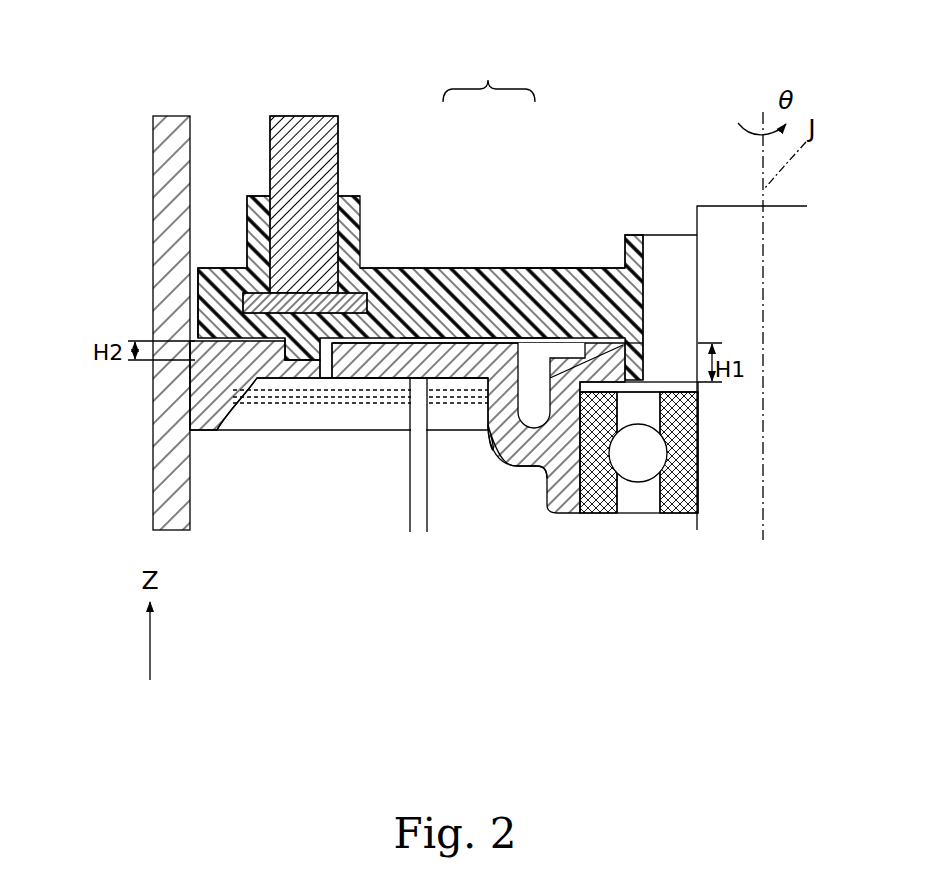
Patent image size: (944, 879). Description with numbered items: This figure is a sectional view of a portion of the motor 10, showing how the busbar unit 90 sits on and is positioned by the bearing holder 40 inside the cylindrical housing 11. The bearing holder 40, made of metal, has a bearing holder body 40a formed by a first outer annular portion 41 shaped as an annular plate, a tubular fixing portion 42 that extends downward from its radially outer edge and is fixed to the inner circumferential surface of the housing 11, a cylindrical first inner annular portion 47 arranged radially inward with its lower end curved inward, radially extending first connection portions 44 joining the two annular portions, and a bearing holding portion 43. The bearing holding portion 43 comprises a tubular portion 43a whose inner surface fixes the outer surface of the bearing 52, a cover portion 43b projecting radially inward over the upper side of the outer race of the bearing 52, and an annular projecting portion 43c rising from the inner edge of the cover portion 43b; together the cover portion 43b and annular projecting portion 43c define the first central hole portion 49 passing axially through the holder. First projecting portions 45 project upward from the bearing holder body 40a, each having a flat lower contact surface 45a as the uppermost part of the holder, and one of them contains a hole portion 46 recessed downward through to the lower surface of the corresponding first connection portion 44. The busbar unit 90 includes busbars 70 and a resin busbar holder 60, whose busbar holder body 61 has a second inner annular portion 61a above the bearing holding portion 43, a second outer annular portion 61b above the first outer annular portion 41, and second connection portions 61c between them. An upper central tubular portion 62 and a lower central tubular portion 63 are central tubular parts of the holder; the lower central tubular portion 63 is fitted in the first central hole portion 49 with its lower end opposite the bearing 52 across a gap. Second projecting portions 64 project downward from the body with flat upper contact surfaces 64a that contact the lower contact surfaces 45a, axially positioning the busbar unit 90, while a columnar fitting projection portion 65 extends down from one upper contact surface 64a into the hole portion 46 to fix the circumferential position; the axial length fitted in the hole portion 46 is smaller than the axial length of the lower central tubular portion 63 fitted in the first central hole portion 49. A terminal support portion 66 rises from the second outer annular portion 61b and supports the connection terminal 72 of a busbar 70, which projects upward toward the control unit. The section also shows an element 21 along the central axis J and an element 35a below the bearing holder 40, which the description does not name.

The motor 10 is at (700, 86).
The housing 11 is at (178, 162).
The shaft 21 is at (785, 213).
The tube portion 35a is at (427, 486).
The bearing holder 40 is at (203, 440).
The bearing holder body 40a is at (511, 472).
The first outer annular portion 41 is at (258, 378).
The tubular fixing portion 42 is at (215, 410).
The bearing holding portion 43 is at (655, 600).
The tubular portion 43a is at (580, 484).
The cover portion 43b is at (624, 478).
The annular projecting portion 43c is at (679, 486).
The first connection portion 44 is at (463, 373).
The first projecting portion 45 is at (422, 285).
The lower contact surface 45a is at (352, 378).
The hole portion 46 is at (326, 375).
The first inner annular portion 47 is at (487, 433).
The first central hole portion 49 is at (635, 355).
The bearing 52 is at (660, 460).
The busbar holder 60 is at (547, 258).
The busbar holder body 61 is at (203, 254).
The second inner annular portion 61a is at (588, 275).
The second outer annular portion 61b is at (208, 297).
The second connection portion 61c is at (474, 302).
The upper central tubular portion 62 is at (638, 234).
The lower central tubular portion 63 is at (688, 395).
The second projecting portion 64 is at (243, 330).
The upper contact surface 64a is at (302, 300).
The fitting projection portion 65 is at (303, 362).
The terminal support portion 66 is at (258, 194).
The busbar 70 is at (352, 176).
The connection terminal 72 is at (340, 138).
The busbar unit 90 is at (489, 75).